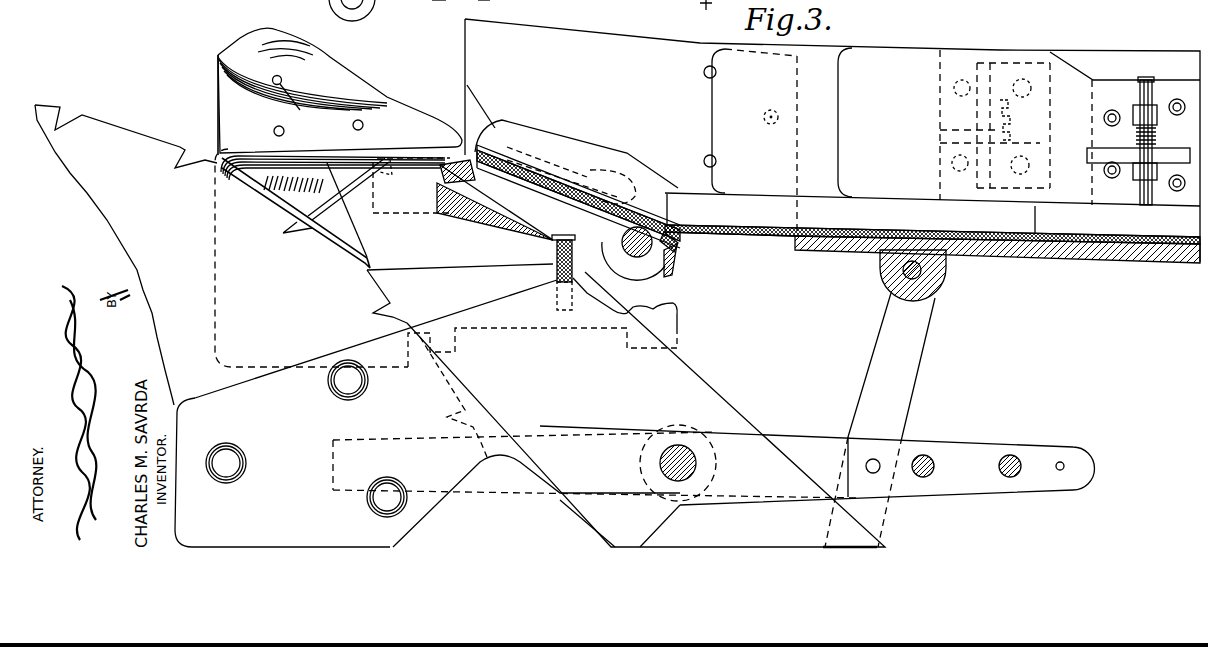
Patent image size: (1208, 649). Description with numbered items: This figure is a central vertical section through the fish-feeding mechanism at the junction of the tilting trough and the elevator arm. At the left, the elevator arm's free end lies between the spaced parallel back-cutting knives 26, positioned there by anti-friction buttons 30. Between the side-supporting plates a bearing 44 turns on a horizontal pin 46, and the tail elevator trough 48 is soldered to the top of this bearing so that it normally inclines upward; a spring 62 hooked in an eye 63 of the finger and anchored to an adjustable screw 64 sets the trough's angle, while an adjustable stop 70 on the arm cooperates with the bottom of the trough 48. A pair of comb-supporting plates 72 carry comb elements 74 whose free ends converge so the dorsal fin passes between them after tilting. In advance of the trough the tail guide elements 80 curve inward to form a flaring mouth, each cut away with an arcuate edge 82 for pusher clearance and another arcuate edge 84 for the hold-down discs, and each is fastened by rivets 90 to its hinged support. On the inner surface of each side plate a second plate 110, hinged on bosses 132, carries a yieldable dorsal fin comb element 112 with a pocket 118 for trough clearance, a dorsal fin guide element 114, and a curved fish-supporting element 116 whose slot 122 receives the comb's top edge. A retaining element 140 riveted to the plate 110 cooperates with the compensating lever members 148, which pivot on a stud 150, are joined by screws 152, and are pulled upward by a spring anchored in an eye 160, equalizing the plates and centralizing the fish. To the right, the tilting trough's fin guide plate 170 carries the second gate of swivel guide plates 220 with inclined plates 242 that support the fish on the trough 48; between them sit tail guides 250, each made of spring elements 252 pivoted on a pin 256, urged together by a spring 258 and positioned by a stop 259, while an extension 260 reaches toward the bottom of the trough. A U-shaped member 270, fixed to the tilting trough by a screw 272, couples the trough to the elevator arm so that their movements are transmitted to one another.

The back-cutting knives 26 is at (132, 140).
The buttons 30 is at (372, 486).
The bearing 44 is at (655, 272).
The horizontal pin 46 is at (613, 240).
The tail elevator trough 48 is at (590, 138).
The spring 62 is at (832, 131).
The eye 63 is at (696, 14).
The screw 64 is at (482, 5).
The adjustable stop 70 is at (557, 254).
The comb-supporting plates 72 is at (437, 6).
The comb element 74 is at (450, 170).
The tail guide elements 80 is at (218, 112).
The arcuate edge 82 is at (383, 101).
The arcuate edge 84 is at (236, 47).
The rivets 90 is at (353, 125).
The second plate 110 is at (503, 322).
The dorsal fin comb element 112 is at (362, 196).
The dorsal fin guide element 114 is at (342, 240).
The fish-supporting element 116 is at (228, 175).
The pocket 118 is at (487, 218).
The slot 122 is at (380, 158).
The bosses 132 is at (434, 362).
The retaining element 140 is at (366, 15).
The compensating lever member 148 is at (805, 437).
The stud 150 is at (698, 463).
The screws 152 is at (998, 466).
The eye 160 is at (1064, 466).
The fin guide plate 170 is at (1108, 253).
The swivel guide plates 220 is at (703, 78).
The plate 242 is at (470, 47).
The tail guides 250 is at (720, 105).
The spring elements 252 is at (888, 58).
The pin 256 is at (1144, 77).
The spring 258 is at (1157, 139).
The stop 259 is at (1165, 98).
The extension 260 is at (756, 220).
The U-shaped member 270 is at (906, 390).
The screw 272 is at (922, 272).